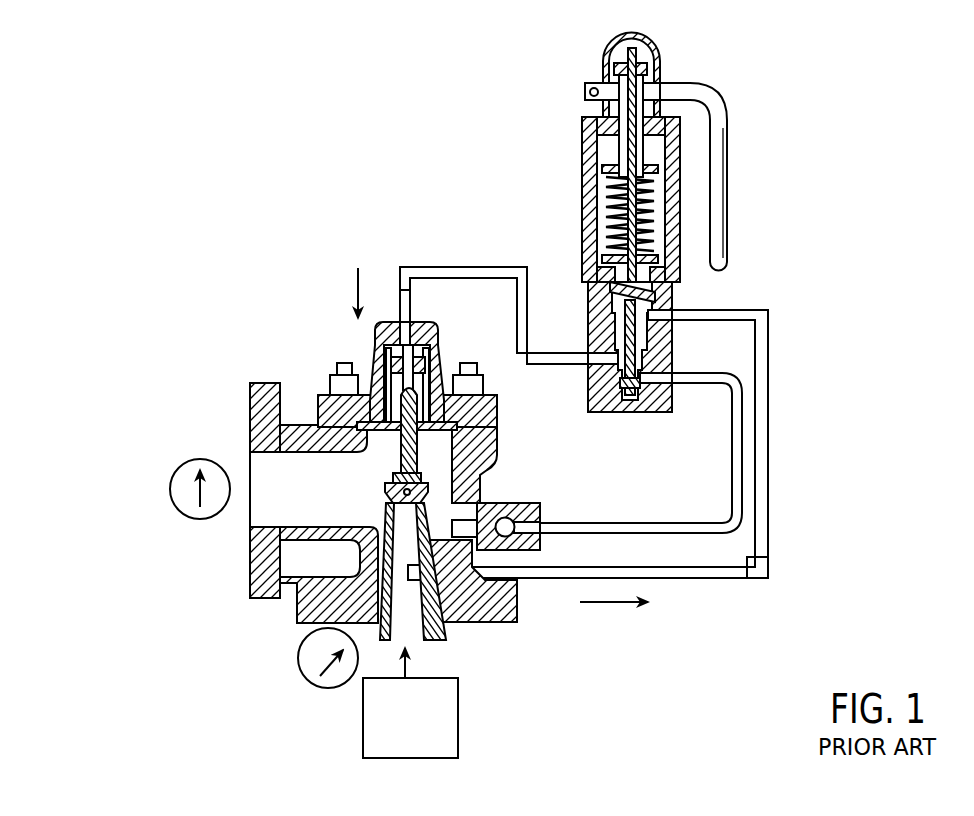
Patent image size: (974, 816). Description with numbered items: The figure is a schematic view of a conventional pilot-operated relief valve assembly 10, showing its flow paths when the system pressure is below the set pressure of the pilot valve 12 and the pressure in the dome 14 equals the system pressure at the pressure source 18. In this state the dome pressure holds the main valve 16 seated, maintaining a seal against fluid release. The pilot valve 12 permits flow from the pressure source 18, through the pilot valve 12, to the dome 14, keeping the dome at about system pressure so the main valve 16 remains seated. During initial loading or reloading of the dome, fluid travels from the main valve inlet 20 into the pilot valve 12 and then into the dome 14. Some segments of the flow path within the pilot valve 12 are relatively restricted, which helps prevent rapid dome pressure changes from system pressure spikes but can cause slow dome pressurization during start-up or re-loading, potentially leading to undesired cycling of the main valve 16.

The pilot-operated relief valve assembly 10 is at (430, 150).
The pilot valve 12 is at (576, 194).
The dome 14 is at (390, 345).
The main valve 16 is at (275, 364).
The pressure source 18 is at (375, 733).
The main valve inlet 20 is at (415, 633).